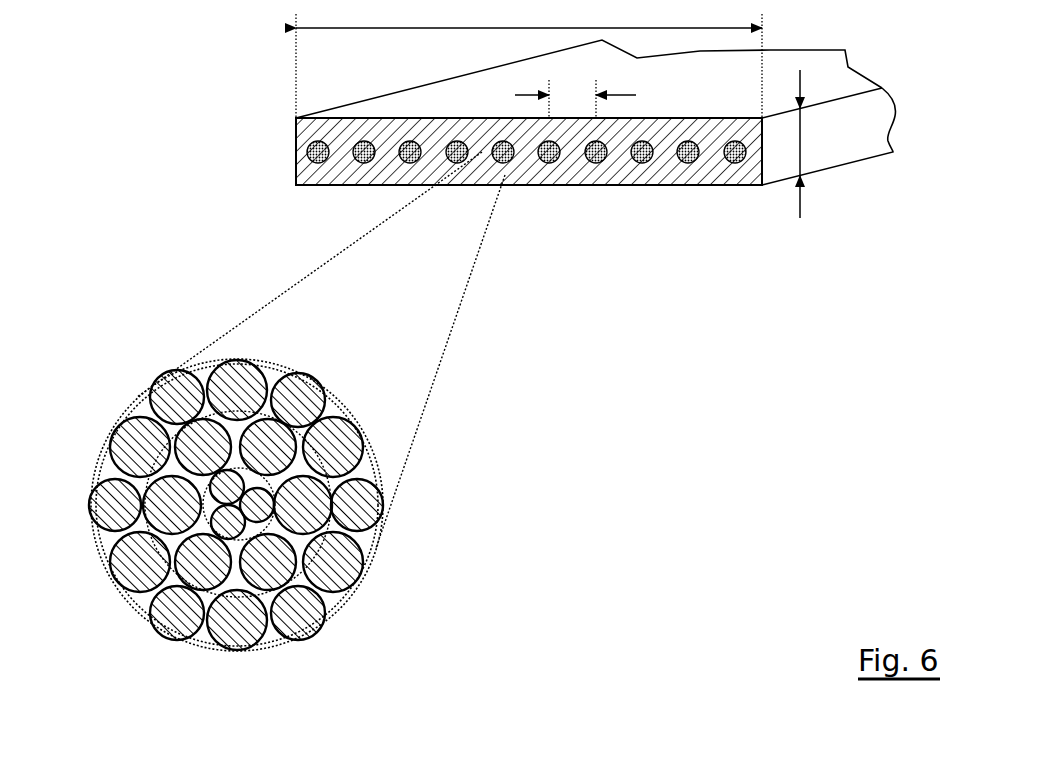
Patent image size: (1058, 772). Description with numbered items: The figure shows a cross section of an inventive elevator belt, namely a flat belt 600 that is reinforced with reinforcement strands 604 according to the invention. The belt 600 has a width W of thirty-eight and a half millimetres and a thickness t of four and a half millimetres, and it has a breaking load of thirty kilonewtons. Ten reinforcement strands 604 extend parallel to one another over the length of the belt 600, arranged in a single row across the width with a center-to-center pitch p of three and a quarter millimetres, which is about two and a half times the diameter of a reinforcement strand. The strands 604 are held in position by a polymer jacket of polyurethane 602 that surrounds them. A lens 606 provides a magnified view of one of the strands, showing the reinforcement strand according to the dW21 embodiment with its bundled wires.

The belt 600 is at (222, 130).
The polymer jacket of polyurethane 602 is at (464, 194).
The reinforcement strands 604 is at (408, 146).
The lens 606 is at (378, 484).